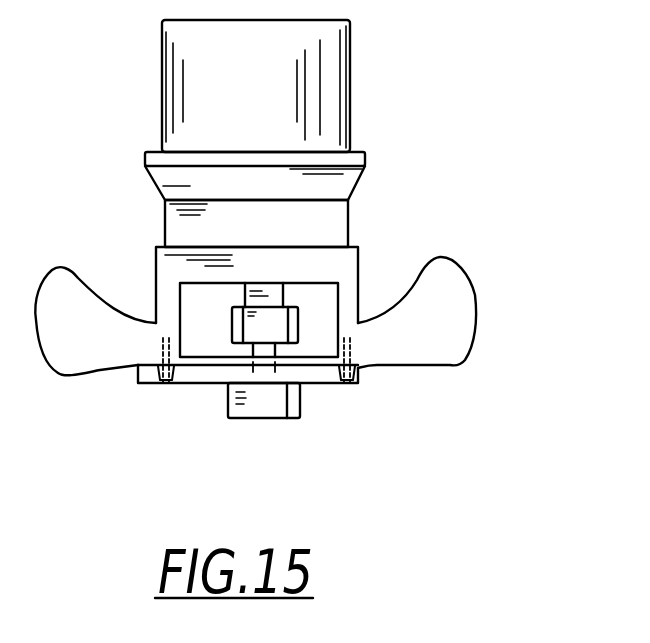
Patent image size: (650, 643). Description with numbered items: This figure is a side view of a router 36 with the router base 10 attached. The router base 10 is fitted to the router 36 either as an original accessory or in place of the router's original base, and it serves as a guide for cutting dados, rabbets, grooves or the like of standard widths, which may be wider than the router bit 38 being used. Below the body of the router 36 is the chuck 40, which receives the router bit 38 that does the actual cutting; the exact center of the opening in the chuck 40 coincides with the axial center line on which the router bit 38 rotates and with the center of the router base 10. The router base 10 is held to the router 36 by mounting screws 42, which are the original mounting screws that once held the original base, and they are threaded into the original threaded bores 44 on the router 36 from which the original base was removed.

The router base 10 is at (498, 372).
The router 36 is at (358, 87).
The router bit 38 is at (240, 416).
The chuck 40 is at (273, 320).
The mounting screws 42 is at (163, 382).
The threaded bores 44 is at (348, 350).